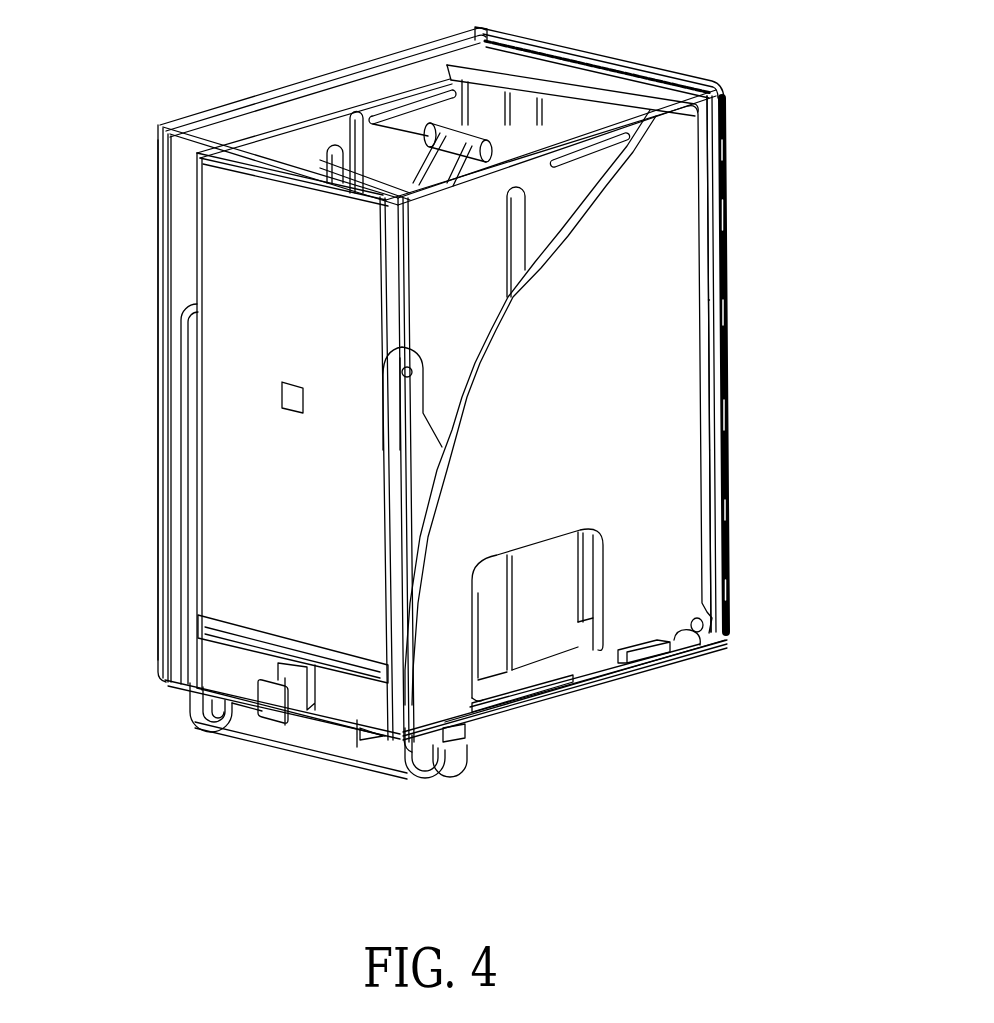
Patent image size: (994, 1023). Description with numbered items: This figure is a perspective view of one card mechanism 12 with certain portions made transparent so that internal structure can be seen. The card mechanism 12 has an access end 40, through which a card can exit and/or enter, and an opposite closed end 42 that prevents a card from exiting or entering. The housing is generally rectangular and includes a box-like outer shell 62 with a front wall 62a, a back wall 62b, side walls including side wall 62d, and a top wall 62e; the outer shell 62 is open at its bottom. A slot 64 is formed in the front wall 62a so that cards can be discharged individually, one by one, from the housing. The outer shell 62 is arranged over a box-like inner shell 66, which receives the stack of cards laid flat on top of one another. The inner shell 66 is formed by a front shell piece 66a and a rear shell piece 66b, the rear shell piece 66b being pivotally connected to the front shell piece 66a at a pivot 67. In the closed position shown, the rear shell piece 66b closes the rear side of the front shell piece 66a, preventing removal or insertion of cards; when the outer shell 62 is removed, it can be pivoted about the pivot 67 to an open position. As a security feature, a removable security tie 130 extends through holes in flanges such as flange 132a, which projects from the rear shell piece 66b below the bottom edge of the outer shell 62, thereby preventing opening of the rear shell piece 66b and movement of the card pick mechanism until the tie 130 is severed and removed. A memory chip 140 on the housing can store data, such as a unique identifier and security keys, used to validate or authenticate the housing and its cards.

The card mechanism 12 is at (673, 718).
The access end 40 is at (185, 233).
The closed end 42 is at (727, 246).
The outer shell 62 is at (586, 50).
The front wall 62a is at (235, 528).
The back wall 62b is at (707, 358).
The side wall 62d is at (707, 514).
The top wall 62e is at (302, 108).
The slot 64 is at (357, 673).
The inner shell 66 is at (234, 276).
The front shell piece 66a is at (245, 466).
The rear shell piece 66b is at (648, 443).
The pivot 67 is at (708, 646).
The removable security tie 130 is at (263, 742).
The flange 132a is at (453, 747).
The memory chip 140 is at (280, 398).